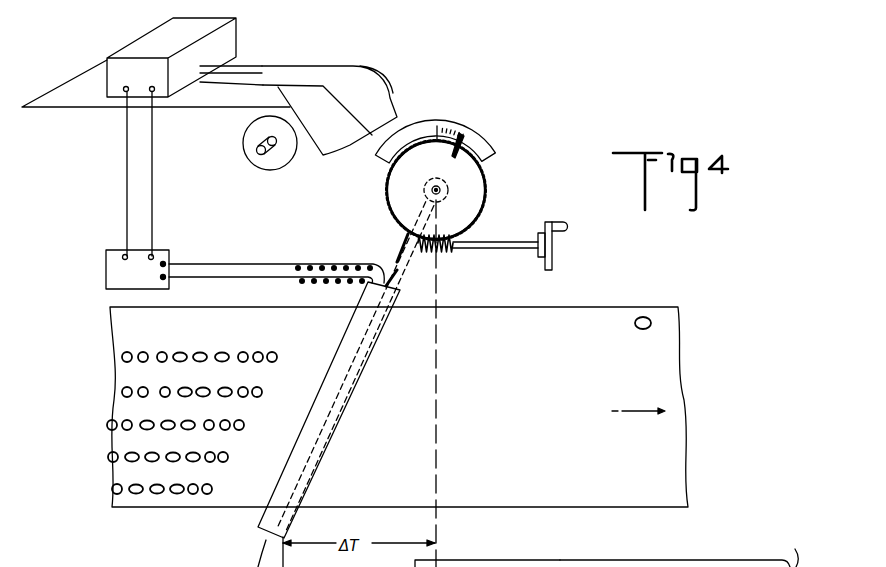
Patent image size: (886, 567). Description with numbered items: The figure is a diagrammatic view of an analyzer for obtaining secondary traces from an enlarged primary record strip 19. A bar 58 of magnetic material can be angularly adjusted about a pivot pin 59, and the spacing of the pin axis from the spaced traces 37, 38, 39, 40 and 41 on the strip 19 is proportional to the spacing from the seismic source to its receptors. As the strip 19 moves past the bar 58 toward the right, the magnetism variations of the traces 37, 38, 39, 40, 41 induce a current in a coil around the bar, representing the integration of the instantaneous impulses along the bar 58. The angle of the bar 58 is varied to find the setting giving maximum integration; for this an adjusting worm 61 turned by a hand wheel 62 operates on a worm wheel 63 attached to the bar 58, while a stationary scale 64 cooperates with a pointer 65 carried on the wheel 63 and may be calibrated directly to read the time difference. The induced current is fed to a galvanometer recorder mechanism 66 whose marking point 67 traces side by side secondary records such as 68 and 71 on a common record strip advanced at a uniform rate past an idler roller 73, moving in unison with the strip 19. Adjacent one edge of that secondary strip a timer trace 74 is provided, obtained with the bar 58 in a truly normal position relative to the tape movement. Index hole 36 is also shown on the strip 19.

The galvanometer recorder mechanism 66 is at (187, 75).
The secondary record 71 is at (214, 98).
The marking point 67 is at (263, 80).
The idler roller 73 is at (282, 163).
The stationary scale 64 is at (458, 129).
The pointer 65 is at (465, 148).
The pivot pin 59 is at (447, 188).
The worm wheel 63 is at (470, 198).
The hand wheel 62 is at (552, 248).
The adjusting worm 61 is at (453, 257).
The index hole 36 is at (642, 317).
The trace 37 is at (200, 352).
The trace 38 is at (163, 388).
The trace 39 is at (125, 423).
The trace 40 is at (110, 456).
The trace 41 is at (112, 493).
The bar 58 is at (262, 529).
The strip 19 is at (480, 502).
The timer trace 74 is at (517, 566).
The secondary record 68 is at (588, 566).